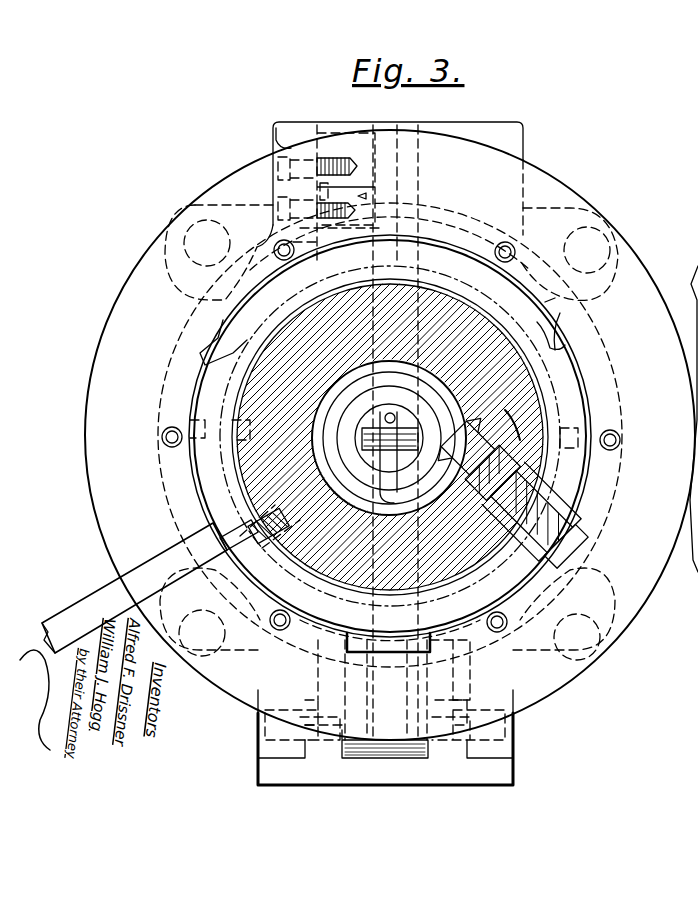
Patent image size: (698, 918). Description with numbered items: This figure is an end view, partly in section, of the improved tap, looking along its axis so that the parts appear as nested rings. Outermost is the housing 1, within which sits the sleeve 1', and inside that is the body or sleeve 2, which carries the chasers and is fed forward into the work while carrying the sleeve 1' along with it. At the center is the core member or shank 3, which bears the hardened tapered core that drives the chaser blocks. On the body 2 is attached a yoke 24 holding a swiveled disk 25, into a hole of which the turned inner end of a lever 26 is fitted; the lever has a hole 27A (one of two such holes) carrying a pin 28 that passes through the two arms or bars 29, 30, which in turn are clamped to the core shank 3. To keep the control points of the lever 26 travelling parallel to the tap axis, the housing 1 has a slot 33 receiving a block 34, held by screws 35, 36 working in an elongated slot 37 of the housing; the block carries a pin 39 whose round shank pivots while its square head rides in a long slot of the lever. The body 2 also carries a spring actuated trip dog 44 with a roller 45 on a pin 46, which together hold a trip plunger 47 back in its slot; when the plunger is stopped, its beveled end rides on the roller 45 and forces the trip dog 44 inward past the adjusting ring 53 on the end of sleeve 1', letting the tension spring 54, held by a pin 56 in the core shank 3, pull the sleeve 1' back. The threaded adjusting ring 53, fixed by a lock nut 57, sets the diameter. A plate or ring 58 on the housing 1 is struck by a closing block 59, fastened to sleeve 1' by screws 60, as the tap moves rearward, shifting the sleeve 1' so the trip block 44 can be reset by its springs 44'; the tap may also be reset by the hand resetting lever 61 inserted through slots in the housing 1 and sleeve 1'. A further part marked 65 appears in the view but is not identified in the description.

The housing 1 is at (391, 447).
The sleeve 1' is at (590, 330).
The body or sleeve 2 is at (540, 366).
The core member or shank 3 is at (515, 298).
The yoke 24 is at (400, 655).
The swiveled disk 25 is at (345, 722).
The lever 26 is at (395, 224).
The hole 27A is at (322, 658).
The pin 28 is at (455, 640).
The arm or bar 29 is at (280, 574).
The arm or bar 30 is at (507, 618).
The slot 33 is at (405, 132).
The block 34 is at (338, 135).
The screw 35 is at (276, 162).
The screw 36 is at (272, 203).
The elongated slot 37 is at (273, 123).
The pin 39 is at (362, 196).
The trip dog 44 is at (545, 509).
The springs 44' is at (508, 520).
The roller 45 is at (535, 512).
The pin 46 is at (595, 442).
The trip plunger 47 is at (520, 545).
The adjusting ring 53 is at (545, 300).
The tension spring 54 is at (445, 436).
The pin 56 is at (389, 438).
The lock nut 57 is at (560, 340).
The plate or ring 58 is at (214, 198).
The closing block 59 is at (525, 270).
The screws 60 is at (497, 238).
The hand resetting lever 61 is at (88, 600).
The pivot pin 65 is at (284, 625).